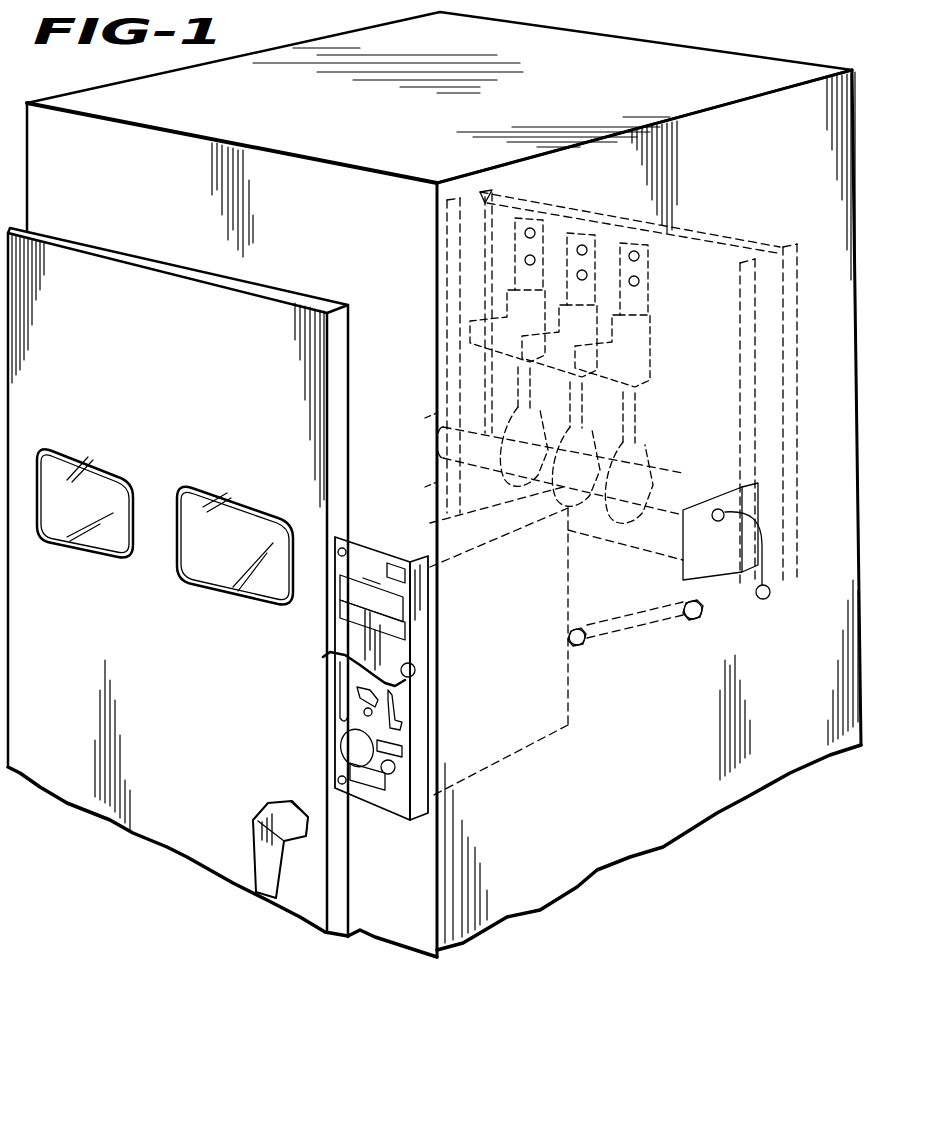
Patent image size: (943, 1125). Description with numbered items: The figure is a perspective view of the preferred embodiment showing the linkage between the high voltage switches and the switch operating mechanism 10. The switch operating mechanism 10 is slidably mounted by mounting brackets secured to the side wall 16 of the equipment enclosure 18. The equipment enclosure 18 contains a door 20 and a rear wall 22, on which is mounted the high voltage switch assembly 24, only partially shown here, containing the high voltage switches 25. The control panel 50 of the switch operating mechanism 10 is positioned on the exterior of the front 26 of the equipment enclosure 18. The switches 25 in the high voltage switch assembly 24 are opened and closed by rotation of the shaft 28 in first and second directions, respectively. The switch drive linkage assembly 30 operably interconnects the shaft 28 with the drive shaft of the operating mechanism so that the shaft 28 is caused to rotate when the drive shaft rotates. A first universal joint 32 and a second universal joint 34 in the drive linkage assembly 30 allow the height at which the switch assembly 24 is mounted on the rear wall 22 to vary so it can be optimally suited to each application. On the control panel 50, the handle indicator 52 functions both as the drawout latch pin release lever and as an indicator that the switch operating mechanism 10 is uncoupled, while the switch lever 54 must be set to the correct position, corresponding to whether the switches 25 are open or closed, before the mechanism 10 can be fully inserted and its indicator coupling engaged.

The switch operating mechanism 10 is at (463, 763).
The side wall 16 is at (585, 853).
The equipment enclosure 18 is at (270, 1005).
The door 20 is at (172, 850).
The rear wall 22 is at (720, 230).
The high voltage switch assembly 24 is at (630, 383).
The high voltage switches 25 is at (523, 217).
The front 26 is at (418, 923).
The shaft 28 is at (670, 477).
The switch drive linkage assembly 30 is at (627, 650).
The first universal joint 32 is at (582, 647).
The second universal joint 34 is at (703, 623).
The control panel 50 is at (365, 792).
The handle indicator 52 is at (403, 767).
The switch lever 54 is at (403, 713).